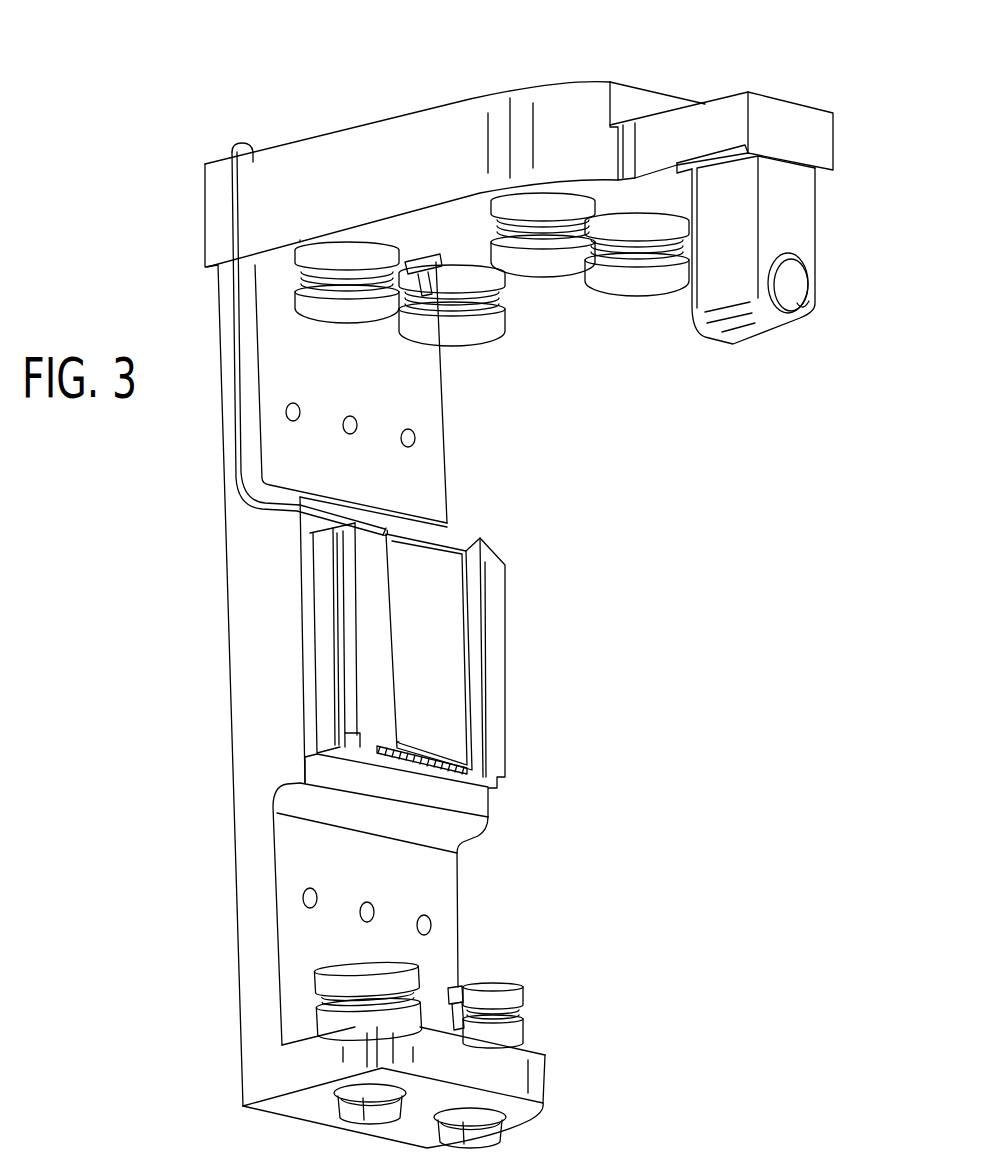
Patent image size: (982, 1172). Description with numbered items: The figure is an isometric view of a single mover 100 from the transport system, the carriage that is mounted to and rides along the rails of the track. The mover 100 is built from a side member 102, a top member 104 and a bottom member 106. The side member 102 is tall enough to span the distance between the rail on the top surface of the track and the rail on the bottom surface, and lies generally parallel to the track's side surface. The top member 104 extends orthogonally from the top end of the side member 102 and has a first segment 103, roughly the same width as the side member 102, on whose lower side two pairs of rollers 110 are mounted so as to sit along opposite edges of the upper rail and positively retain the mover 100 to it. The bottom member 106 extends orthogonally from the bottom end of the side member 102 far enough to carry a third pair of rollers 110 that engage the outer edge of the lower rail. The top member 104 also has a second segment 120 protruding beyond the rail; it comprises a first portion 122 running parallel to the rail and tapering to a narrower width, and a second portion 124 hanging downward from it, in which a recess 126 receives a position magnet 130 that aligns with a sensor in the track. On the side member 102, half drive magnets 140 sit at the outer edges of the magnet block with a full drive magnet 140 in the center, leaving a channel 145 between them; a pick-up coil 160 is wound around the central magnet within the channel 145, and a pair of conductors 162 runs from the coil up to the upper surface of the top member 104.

The mover 100 is at (175, 80).
The side member 102 is at (227, 615).
The first segment 103 is at (323, 171).
The top member 104 is at (392, 115).
The bottom member 106 is at (507, 1072).
The rollers 110 is at (420, 334).
The second segment 120 is at (787, 104).
The first portion 122 is at (692, 133).
The second portion 124 is at (792, 217).
The recess 126 is at (805, 298).
The position magnet 130 is at (792, 284).
The drive magnet 140 is at (488, 628).
The channel 145 is at (483, 694).
The pick-up coil 160 is at (455, 548).
The conductors 162 is at (240, 313).